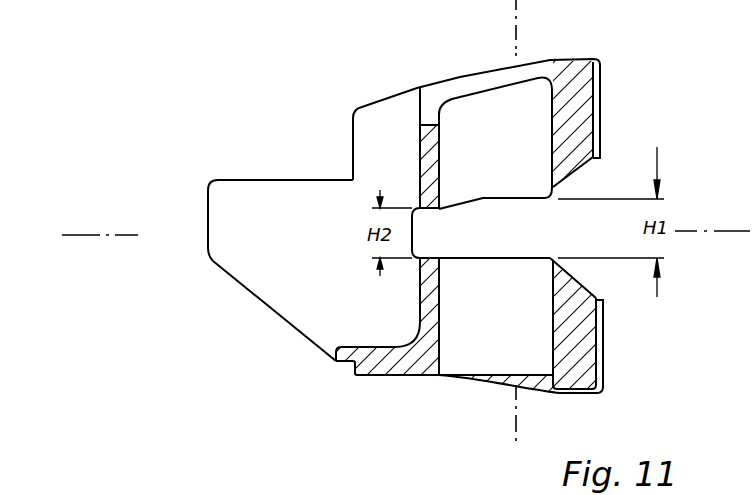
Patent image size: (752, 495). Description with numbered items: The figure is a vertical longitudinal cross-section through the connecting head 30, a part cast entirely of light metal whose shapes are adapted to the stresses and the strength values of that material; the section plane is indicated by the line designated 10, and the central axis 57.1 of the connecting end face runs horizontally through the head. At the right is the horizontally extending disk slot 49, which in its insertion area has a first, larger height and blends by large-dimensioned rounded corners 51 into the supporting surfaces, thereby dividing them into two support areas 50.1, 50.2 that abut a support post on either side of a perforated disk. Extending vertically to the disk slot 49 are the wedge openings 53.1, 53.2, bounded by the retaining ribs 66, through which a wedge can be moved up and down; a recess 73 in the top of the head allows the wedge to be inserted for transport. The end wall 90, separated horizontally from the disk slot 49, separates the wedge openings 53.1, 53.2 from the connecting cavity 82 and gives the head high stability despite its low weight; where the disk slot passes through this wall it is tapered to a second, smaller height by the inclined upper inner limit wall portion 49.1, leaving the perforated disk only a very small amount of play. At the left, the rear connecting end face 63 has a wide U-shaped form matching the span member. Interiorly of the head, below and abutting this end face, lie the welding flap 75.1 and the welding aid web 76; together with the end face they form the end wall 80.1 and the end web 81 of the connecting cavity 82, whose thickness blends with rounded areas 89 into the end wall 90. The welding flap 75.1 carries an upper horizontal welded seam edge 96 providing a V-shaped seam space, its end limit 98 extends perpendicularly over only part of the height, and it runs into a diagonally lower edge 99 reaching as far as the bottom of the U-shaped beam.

The connecting head 30 is at (376, 247).
The axial direction 10 is at (463, 435).
The disk slot 49 is at (503, 238).
The inclined upper inner limit wall portion 49.1 is at (455, 206).
The support area 50.1 is at (595, 117).
The support area 50.2 is at (601, 352).
The rounded corners 51 is at (572, 180).
The wedge opening 53.1 is at (532, 150).
The wedge opening 53.2 is at (532, 326).
The central axis 57.1 is at (95, 237).
The connecting end face 63 is at (350, 373).
The retaining ribs 66 is at (470, 83).
The recess 73 is at (430, 118).
The welding flap 75.1 is at (314, 228).
The welding aid web 76 is at (335, 362).
The end wall 80.1 is at (368, 140).
The end web 81 is at (405, 374).
The connecting cavity 82 is at (390, 323).
The rounded areas 89 is at (414, 338).
The end wall 90 is at (419, 166).
The upper horizontal welded seam edge 96 is at (263, 178).
The end limits 98 is at (208, 223).
The diagonally lower edge 99 is at (255, 296).